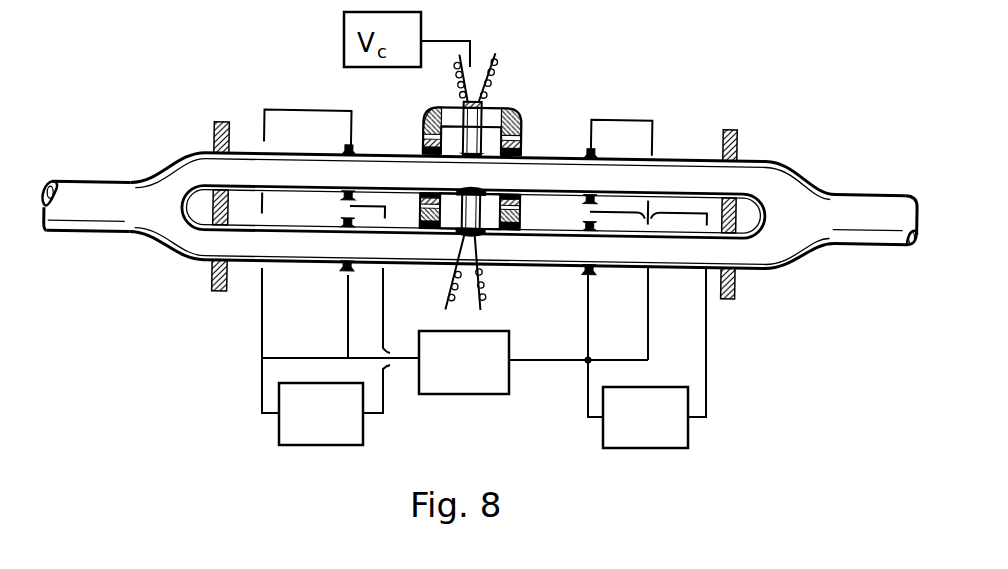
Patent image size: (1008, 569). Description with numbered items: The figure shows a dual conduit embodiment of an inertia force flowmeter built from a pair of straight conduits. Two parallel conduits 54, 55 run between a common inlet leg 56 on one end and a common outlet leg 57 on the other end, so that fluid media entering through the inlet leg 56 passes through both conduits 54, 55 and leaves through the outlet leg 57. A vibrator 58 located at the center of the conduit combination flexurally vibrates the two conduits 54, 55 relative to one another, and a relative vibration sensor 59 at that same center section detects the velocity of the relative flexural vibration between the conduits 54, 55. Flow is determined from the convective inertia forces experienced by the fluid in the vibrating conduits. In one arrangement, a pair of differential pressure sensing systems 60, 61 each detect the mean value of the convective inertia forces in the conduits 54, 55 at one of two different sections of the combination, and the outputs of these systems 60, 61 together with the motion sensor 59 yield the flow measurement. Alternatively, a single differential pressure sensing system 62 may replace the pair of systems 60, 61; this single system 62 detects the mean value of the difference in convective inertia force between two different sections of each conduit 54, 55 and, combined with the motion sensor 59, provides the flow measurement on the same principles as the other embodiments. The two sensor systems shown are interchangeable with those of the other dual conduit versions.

The conduit 54 is at (245, 168).
The conduit 55 is at (250, 248).
The common inlet leg 56 is at (90, 192).
The common outlet leg 57 is at (870, 205).
The vibrator 58 is at (483, 202).
The relative vibration sensor 59 is at (503, 130).
The differential pressure sensing system 60 is at (297, 445).
The differential pressure sensing system 61 is at (665, 448).
The single differential pressure sensing system 62 is at (460, 394).